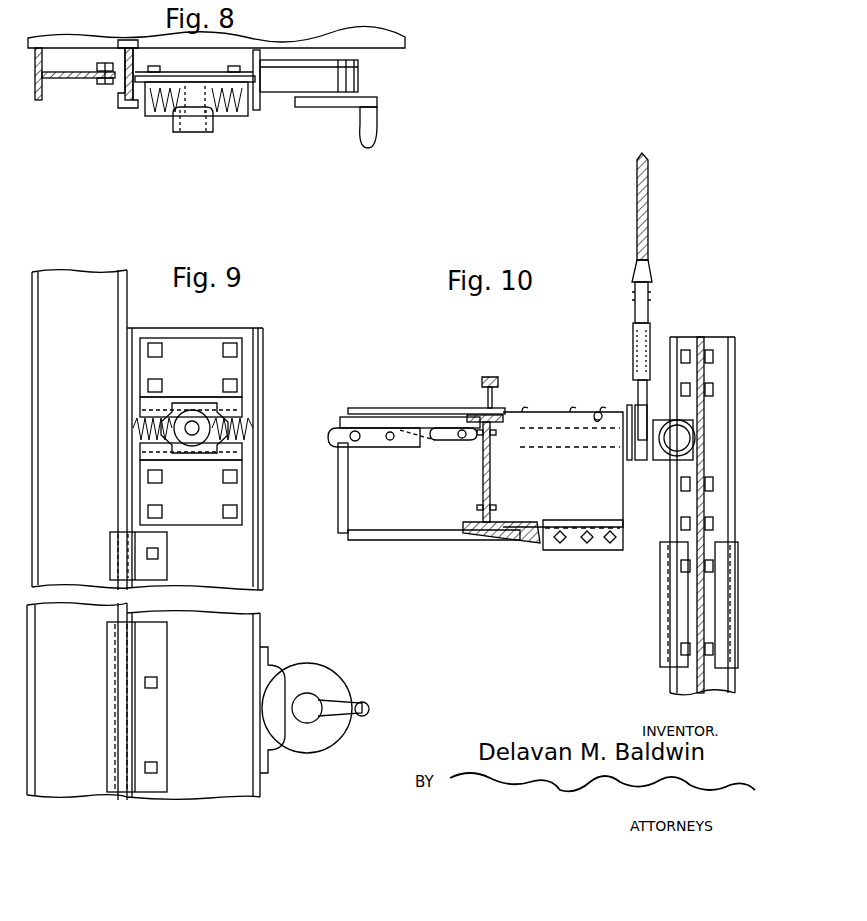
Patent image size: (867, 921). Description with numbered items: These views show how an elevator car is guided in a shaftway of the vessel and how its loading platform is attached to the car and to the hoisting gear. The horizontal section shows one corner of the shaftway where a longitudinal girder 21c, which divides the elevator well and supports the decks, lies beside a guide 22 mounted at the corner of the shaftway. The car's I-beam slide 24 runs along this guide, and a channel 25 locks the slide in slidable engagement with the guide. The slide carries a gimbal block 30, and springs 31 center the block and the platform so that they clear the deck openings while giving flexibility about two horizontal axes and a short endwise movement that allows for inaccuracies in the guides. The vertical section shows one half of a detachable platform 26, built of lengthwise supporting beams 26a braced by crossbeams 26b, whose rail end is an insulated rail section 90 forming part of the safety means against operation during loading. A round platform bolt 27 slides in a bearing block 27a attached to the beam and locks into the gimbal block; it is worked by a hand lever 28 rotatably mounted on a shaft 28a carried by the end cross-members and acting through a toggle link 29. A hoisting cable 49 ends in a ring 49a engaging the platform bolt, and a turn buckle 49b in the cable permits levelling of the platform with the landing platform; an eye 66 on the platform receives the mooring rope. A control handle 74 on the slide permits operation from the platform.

In FIG. 8, the longitudinal girder 21c is at (328, 44).
In FIG. 8, the guide 22 is at (61, 80).
In FIG. 9, the guide 22 is at (92, 274).
In FIG. 8, the slide 24 is at (183, 78).
In FIG. 9, the slide 24 is at (208, 332).
In FIG. 10, the slide 24 is at (727, 410).
In FIG. 8, the channel 25 is at (133, 42).
In FIG. 9, the channel 25 is at (110, 553).
In FIG. 10, the channel 25 is at (660, 625).
In FIG. 10, the platform 26 is at (365, 410).
In FIG. 10, the supporting beam 26a is at (484, 496).
In FIG. 10, the crossbeam 26b is at (345, 480).
In FIG. 10, the platform bolt 27 is at (578, 452).
In FIG. 10, the bearing block 27a is at (621, 516).
In FIG. 10, the hand lever 28 is at (336, 433).
In FIG. 10, the shaft 28a is at (362, 432).
In FIG. 10, the toggle link 29 is at (385, 422).
In FIG. 8, the gimbal block 30 is at (208, 127).
In FIG. 9, the gimbal block 30 is at (190, 413).
In FIG. 10, the gimbal block 30 is at (658, 412).
In FIG. 8, the spring 31 is at (161, 118).
In FIG. 9, the spring 31 is at (246, 437).
In FIG. 10, the hoisting cable 49 is at (649, 226).
In FIG. 10, the ring 49a is at (630, 412).
In FIG. 10, the turn buckle 49b is at (633, 342).
In FIG. 10, the eye 66 is at (596, 412).
In FIG. 8, the control handle 74 is at (372, 140).
In FIG. 9, the control handle 74 is at (365, 700).
In FIG. 10, the rail section 90 is at (496, 374).